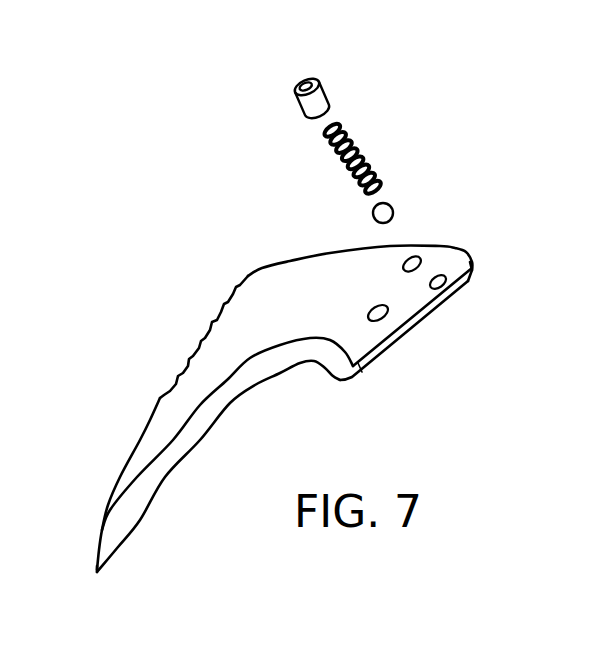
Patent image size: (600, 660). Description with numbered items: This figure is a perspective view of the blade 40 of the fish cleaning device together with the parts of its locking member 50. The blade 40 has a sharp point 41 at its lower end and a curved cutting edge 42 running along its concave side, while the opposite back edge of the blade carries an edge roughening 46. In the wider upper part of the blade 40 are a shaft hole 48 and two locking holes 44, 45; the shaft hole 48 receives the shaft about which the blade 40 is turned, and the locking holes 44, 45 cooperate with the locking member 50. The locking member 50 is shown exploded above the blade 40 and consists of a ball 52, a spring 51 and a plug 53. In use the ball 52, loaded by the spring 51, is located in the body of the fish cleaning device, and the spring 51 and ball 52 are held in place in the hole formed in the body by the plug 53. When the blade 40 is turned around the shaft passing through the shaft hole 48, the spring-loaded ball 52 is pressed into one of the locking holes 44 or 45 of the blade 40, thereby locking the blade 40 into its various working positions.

The blade 40 is at (283, 278).
The point 41 is at (97, 572).
The cutting edge 42 is at (167, 458).
The locking hole 44 is at (473, 278).
The locking hole 45 is at (417, 255).
The edge roughening 46 is at (207, 335).
The shaft hole 48 is at (390, 316).
The locking member 50 is at (394, 130).
The spring 51 is at (372, 168).
The ball 52 is at (392, 208).
The plug 53 is at (328, 80).